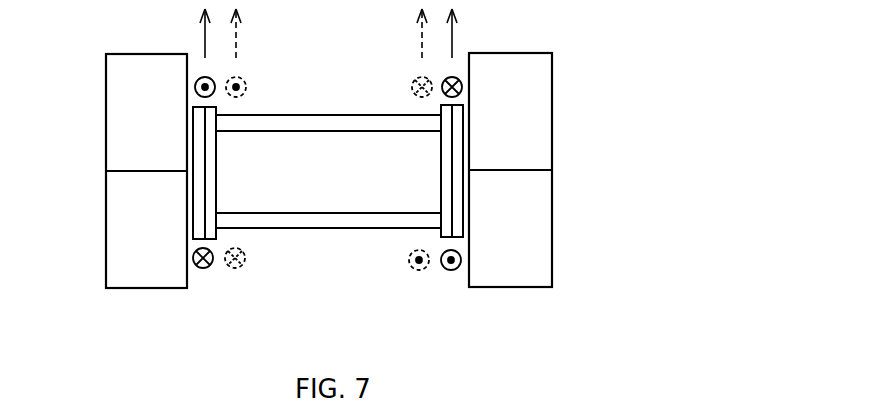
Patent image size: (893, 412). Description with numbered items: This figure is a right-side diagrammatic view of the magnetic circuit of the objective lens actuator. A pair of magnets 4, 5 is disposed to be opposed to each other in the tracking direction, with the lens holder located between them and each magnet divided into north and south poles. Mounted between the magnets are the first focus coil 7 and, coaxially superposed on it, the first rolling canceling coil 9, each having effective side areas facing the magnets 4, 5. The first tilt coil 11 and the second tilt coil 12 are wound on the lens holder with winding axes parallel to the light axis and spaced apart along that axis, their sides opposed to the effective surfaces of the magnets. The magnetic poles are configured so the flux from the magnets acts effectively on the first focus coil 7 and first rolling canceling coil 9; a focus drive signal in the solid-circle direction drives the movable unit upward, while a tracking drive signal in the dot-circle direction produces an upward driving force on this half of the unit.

The magnet 4 is at (552, 135).
The magnet 5 is at (105, 147).
The first focus coil 7 is at (212, 177).
The first rolling canceling coil 9 is at (198, 187).
The first tilt coil 11 is at (332, 115).
The second tilt coil 12 is at (330, 229).